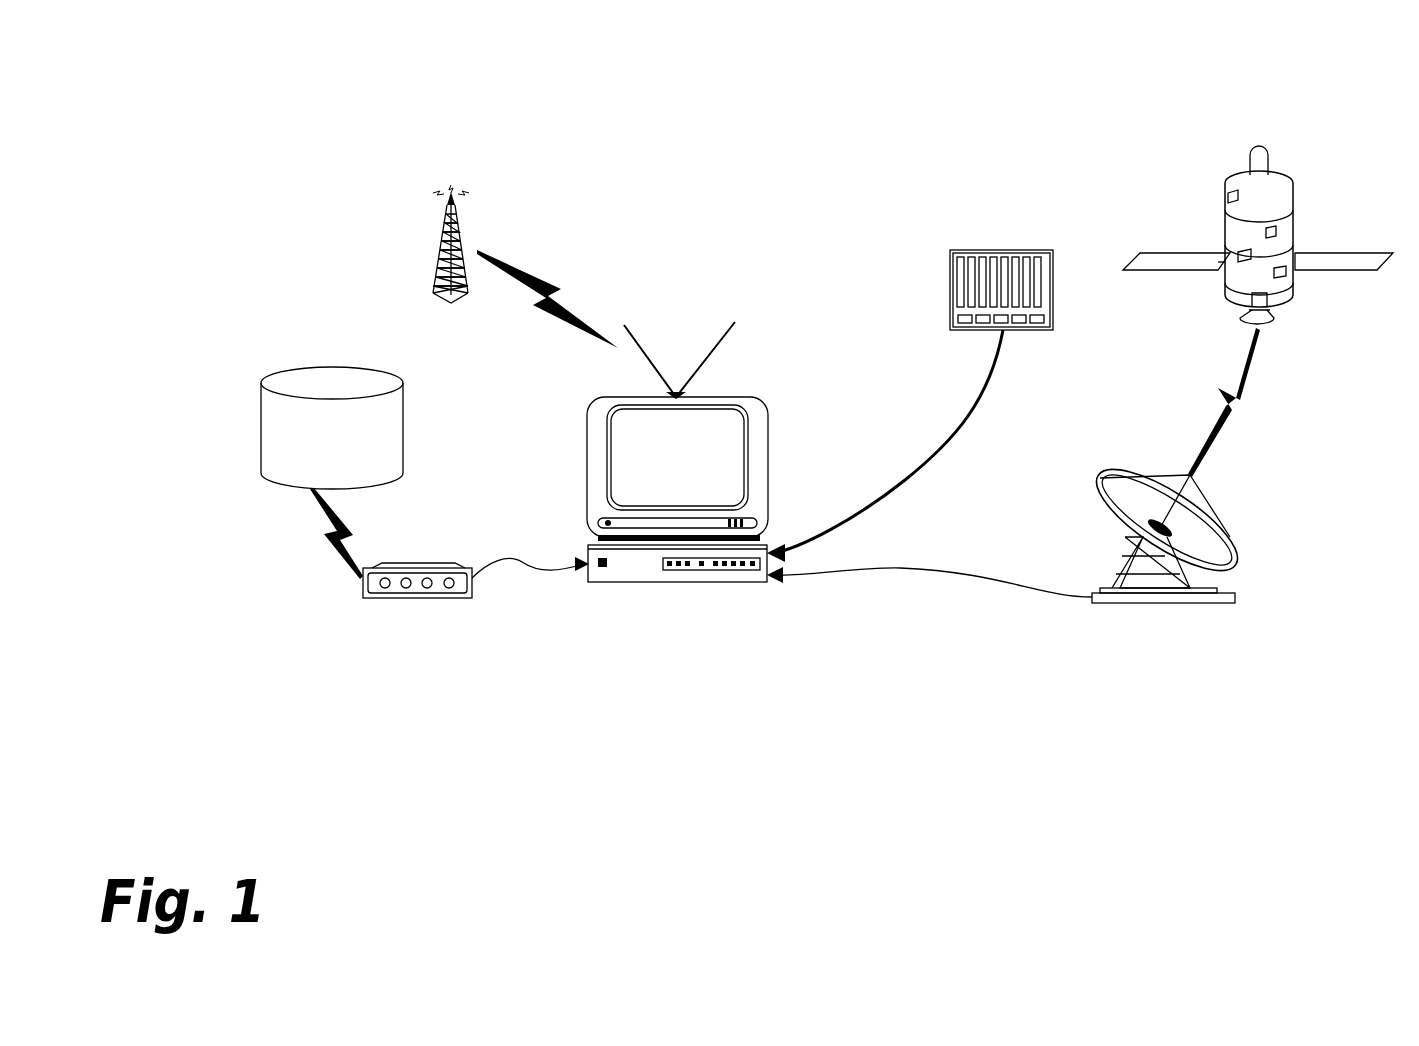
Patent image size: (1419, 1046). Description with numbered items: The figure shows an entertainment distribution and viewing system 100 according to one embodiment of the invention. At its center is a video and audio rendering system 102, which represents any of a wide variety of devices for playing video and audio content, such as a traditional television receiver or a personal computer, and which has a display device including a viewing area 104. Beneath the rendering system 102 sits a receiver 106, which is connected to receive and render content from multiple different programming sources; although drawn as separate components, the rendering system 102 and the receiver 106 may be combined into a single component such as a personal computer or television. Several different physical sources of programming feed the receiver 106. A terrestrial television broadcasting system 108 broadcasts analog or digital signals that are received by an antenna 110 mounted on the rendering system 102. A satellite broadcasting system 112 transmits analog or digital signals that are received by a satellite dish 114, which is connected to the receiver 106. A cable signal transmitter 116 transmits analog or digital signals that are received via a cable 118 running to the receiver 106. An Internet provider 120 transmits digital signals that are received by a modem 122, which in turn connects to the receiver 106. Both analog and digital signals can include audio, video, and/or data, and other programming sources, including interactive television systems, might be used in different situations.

The entertainment distribution and viewing system 100 is at (627, 120).
The video and audio rendering system 102 is at (760, 397).
The viewing area 104 is at (735, 452).
The receiver 106 is at (623, 577).
The terrestrial television broadcasting system 108 is at (446, 222).
The antenna 110 is at (640, 345).
The satellite broadcasting system 112 is at (1230, 182).
The satellite dish 114 is at (1228, 540).
The cable signal transmitter 116 is at (1000, 252).
The cable 118 is at (925, 460).
The Internet provider 120 is at (348, 377).
The modem 122 is at (417, 562).